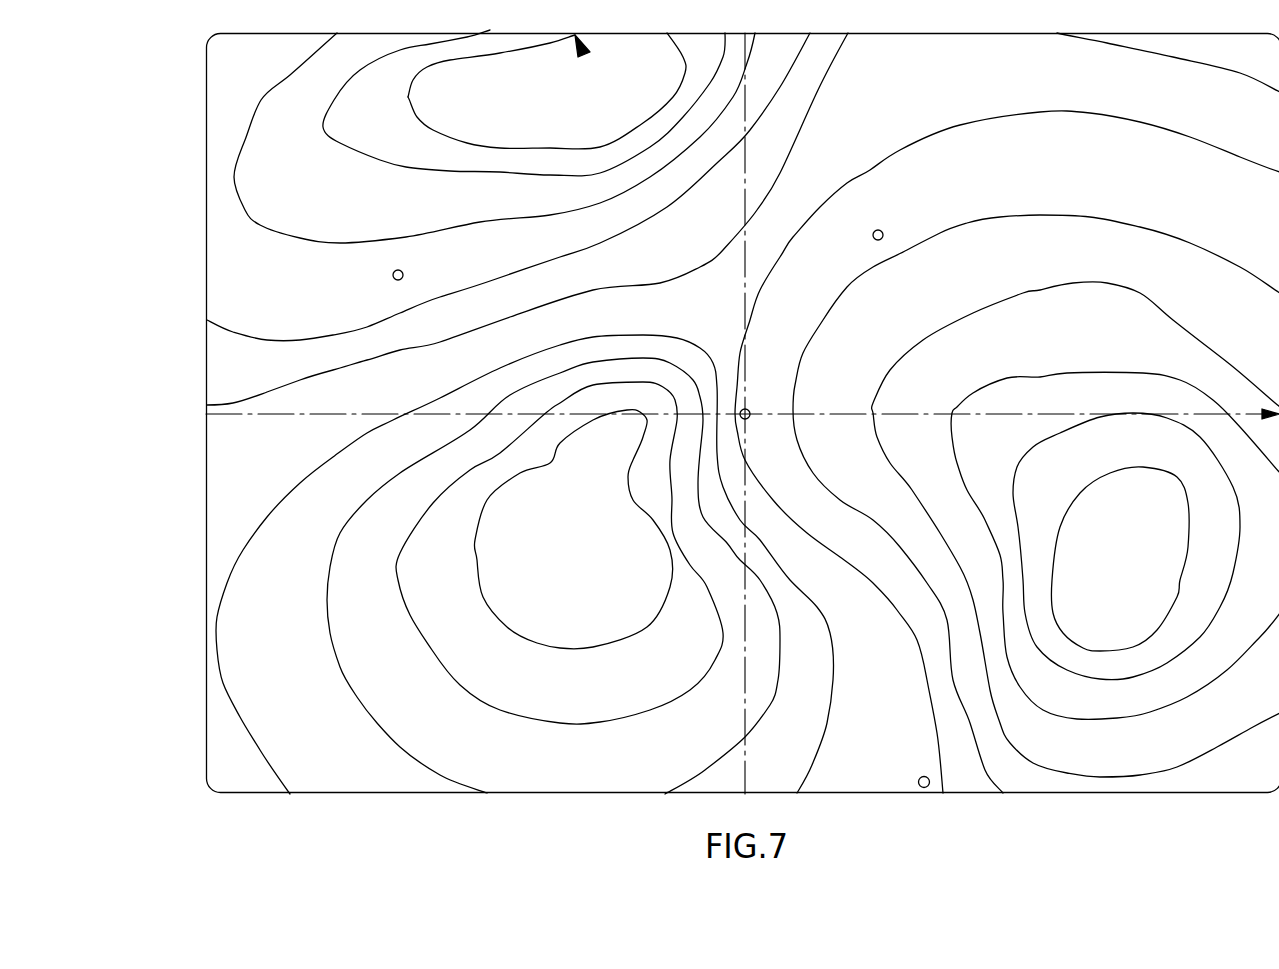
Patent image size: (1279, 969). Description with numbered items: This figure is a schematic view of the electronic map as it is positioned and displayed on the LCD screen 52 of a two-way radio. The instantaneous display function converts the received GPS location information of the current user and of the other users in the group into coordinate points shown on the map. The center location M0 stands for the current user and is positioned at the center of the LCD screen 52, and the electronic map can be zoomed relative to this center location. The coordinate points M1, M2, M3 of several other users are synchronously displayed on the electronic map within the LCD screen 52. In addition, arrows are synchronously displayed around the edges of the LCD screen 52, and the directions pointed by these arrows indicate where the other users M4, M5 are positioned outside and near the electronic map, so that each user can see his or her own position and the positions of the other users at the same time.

The LCD screen 52 is at (206, 258).
The center location M0 is at (734, 413).
The coordinate point M1 is at (902, 776).
The coordinate point M2 is at (878, 254).
The coordinate point M3 is at (401, 294).
The other user M4 is at (1250, 416).
The other user M5 is at (591, 64).